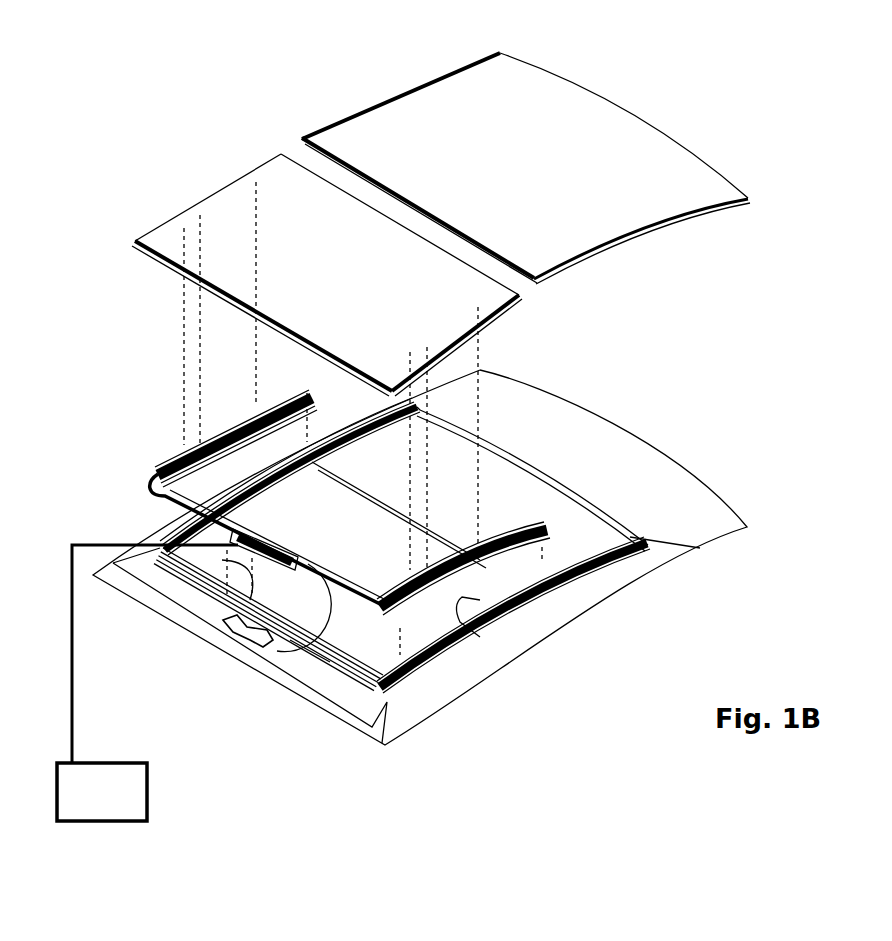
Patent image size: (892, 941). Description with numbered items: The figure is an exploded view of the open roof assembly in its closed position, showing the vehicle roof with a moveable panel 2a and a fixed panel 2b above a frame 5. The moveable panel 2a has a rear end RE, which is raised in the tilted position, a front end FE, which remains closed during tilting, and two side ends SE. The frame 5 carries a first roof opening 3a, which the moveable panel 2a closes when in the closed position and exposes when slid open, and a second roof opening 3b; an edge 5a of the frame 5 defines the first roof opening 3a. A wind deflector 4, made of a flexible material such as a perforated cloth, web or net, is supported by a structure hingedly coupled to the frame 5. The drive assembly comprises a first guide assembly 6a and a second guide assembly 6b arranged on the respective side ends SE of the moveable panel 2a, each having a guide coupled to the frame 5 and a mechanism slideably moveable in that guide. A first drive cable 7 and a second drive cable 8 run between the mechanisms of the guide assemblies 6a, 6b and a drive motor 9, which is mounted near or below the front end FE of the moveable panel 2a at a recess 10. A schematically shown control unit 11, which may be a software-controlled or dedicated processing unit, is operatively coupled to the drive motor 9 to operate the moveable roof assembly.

The moveable panel 2a is at (336, 251).
The fixed panel 2b is at (548, 176).
The rear end RE is at (340, 185).
The side end SE is at (216, 195).
The front end FE is at (230, 318).
The first roof opening 3a is at (336, 561).
The second roof opening 3b is at (523, 512).
The wind deflector 4 is at (163, 560).
The frame 5 is at (467, 672).
The edge 5a is at (478, 633).
The first guide assembly 6a is at (487, 578).
The second guide assembly 6b is at (158, 438).
The first drive cable 7 is at (290, 640).
The second drive cable 8 is at (158, 498).
The drive motor 9 is at (235, 572).
The recess 10 is at (267, 628).
The control unit 11 is at (113, 807).